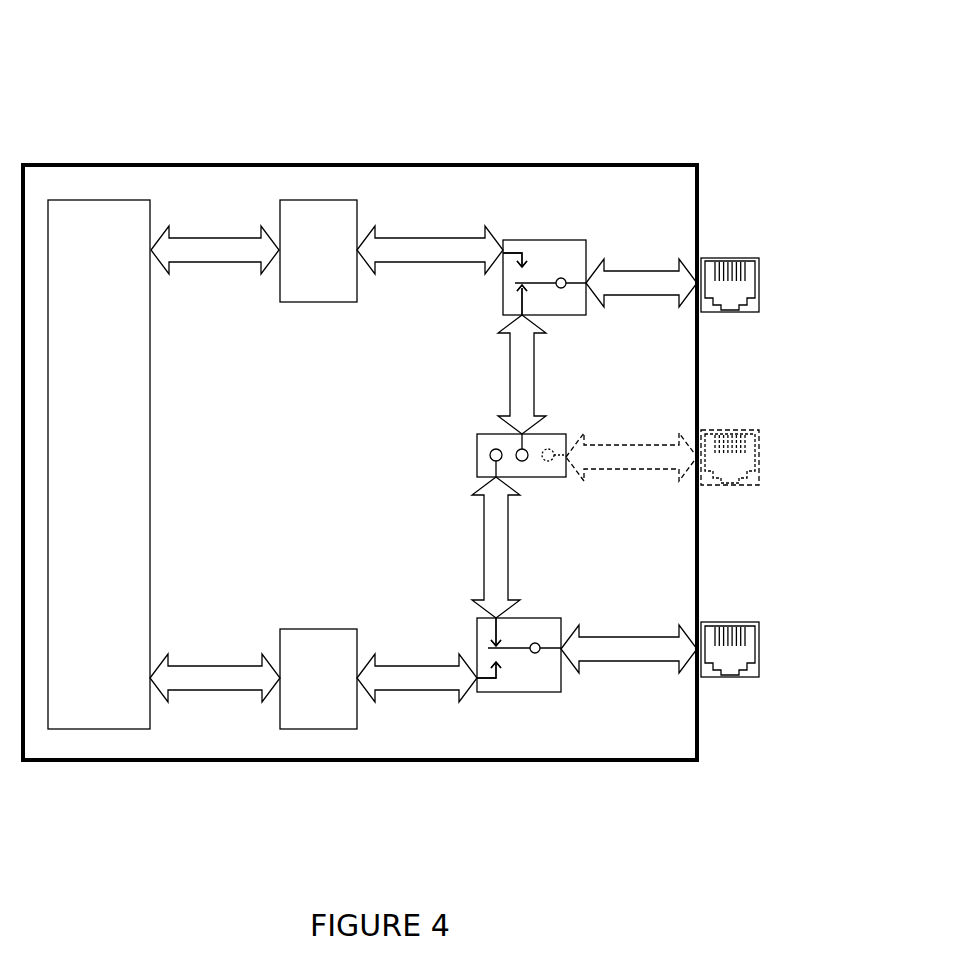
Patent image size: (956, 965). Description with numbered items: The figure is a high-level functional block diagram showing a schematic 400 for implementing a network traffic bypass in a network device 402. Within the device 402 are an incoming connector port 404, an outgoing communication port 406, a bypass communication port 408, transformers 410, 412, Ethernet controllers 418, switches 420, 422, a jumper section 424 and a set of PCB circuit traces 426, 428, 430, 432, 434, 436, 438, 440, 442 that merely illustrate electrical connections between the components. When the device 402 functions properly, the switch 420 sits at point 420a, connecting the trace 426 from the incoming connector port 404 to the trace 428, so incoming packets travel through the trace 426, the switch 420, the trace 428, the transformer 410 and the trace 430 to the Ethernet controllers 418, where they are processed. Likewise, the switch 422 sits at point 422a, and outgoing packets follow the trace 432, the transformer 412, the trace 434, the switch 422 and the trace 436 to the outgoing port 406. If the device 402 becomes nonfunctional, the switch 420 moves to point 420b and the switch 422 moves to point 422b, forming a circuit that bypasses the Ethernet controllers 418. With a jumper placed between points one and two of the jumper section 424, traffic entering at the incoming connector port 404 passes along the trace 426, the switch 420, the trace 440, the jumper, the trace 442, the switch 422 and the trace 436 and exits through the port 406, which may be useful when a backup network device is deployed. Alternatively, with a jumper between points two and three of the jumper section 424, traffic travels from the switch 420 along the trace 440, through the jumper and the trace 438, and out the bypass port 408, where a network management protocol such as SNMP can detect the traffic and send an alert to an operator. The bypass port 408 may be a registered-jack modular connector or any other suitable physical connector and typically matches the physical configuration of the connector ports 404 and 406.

The schematic 400 is at (78, 100).
The network device 402 is at (310, 461).
The incoming connector port 404 is at (752, 256).
The outgoing communication port 406 is at (750, 620).
The bypass communication port 408 is at (742, 428).
The transformer 410 is at (318, 251).
The transformer 412 is at (318, 679).
The Ethernet controllers 418 is at (99, 464).
The switch 420 is at (549, 276).
The point 420a is at (510, 273).
The point 420b is at (537, 293).
The switch 422 is at (514, 640).
The point 422a is at (505, 670).
The point 422b is at (483, 640).
The jumper section 424 is at (474, 447).
The trace 426 is at (641, 283).
The trace 428 is at (430, 250).
The trace 430 is at (215, 250).
The trace 432 is at (215, 678).
The trace 434 is at (417, 678).
The trace 436 is at (629, 649).
The trace 438 is at (631, 457).
The trace 440 is at (523, 374).
The trace 442 is at (497, 547).